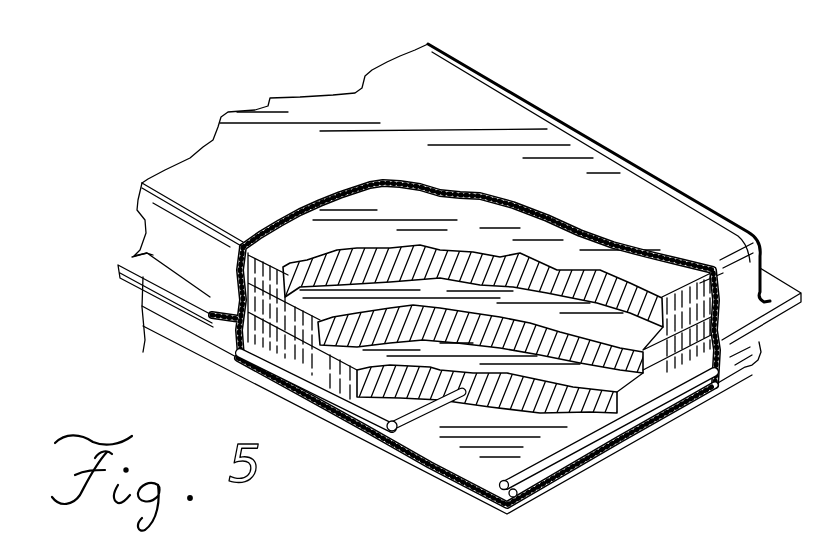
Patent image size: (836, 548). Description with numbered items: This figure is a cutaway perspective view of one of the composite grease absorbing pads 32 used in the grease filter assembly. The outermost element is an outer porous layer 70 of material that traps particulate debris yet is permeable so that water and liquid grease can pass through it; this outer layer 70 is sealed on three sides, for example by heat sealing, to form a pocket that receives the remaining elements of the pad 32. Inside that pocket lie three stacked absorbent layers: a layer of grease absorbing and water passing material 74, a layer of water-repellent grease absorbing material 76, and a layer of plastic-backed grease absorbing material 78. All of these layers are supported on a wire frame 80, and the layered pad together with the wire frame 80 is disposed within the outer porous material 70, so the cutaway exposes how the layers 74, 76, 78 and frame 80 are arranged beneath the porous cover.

The grease absorbing pad 32 is at (172, 99).
The outer porous layer 70 is at (645, 200).
The layer of grease absorbing and water passing material 74 is at (247, 273).
The layer of water-repellent grease absorbing material 76 is at (300, 322).
The layer of plastic-backed grease absorbing material 78 is at (342, 378).
The wire frame 80 is at (388, 443).